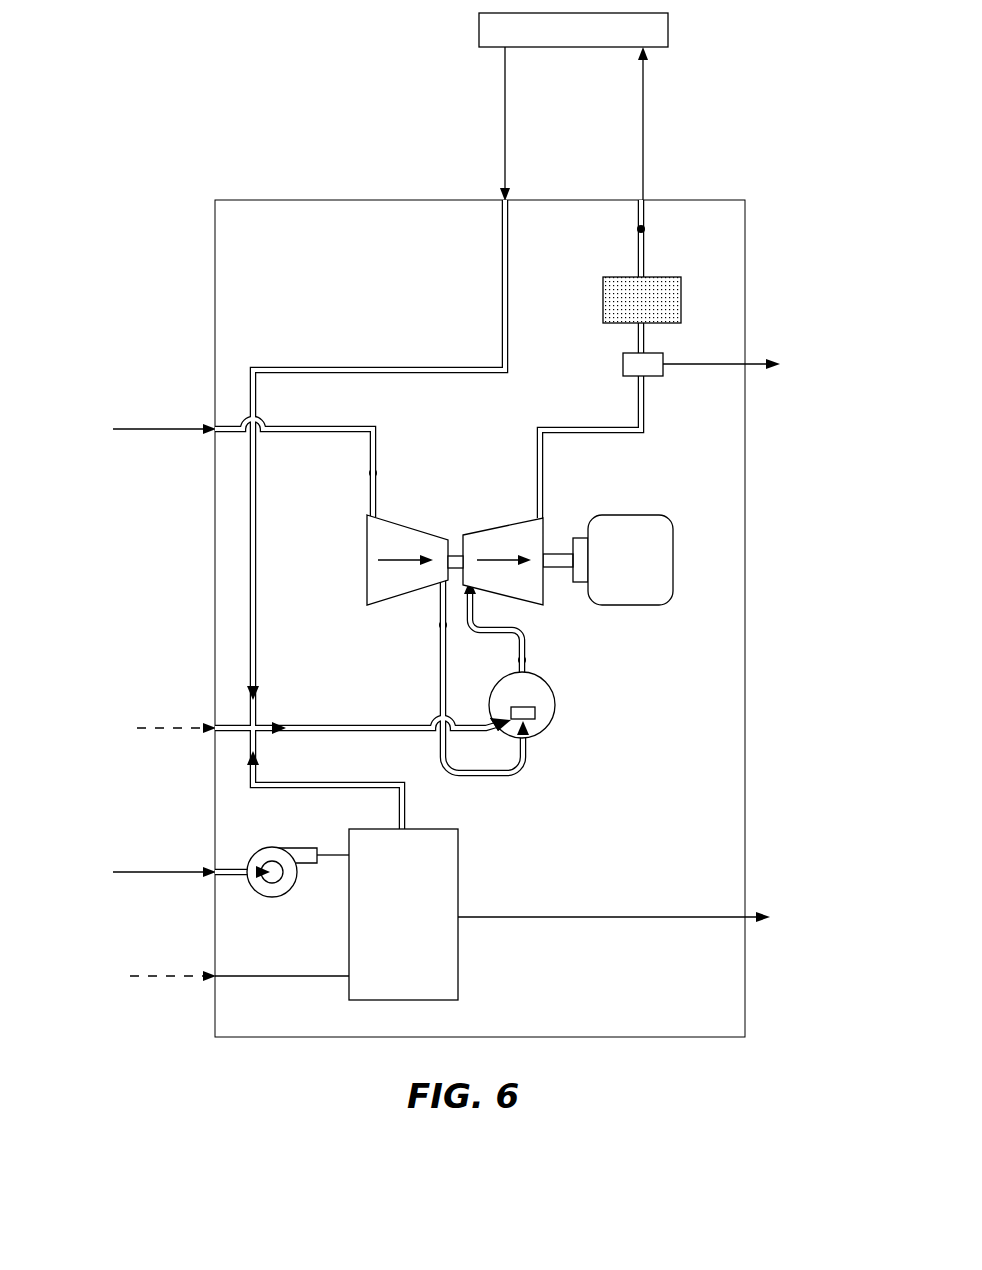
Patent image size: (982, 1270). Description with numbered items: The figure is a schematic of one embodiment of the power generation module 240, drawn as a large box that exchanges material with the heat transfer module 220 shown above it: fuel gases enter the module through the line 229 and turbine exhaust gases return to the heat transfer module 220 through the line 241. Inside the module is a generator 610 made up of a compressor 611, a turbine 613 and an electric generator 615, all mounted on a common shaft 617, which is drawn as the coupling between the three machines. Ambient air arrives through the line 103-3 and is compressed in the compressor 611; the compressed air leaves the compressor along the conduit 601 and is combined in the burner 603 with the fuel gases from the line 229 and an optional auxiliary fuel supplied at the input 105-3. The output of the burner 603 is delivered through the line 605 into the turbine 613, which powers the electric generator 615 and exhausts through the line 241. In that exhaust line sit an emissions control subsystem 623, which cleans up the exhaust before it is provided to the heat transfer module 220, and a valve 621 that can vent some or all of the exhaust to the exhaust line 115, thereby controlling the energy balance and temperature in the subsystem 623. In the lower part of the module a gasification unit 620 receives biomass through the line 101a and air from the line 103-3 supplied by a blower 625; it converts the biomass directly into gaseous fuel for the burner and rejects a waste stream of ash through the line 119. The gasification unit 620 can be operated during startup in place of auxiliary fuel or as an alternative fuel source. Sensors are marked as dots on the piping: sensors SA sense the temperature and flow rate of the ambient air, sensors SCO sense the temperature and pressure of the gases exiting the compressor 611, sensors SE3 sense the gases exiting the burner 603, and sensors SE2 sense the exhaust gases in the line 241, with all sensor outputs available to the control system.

The heat transfer module 220 is at (573, 30).
The line 229 is at (500, 145).
The line 241 is at (646, 105).
The power generation module 240 is at (151, 150).
The line 103-3 is at (165, 427).
The input 105-3 is at (168, 726).
The line 101a is at (165, 972).
The generator 610 is at (459, 450).
The compressor 611 is at (365, 568).
The turbine 613 is at (546, 518).
The electric generator 615 is at (673, 520).
The common shaft 617 is at (560, 553).
The compressed air conduit 601 is at (440, 650).
The burner 603 is at (556, 702).
The line 605 is at (530, 655).
The gasification unit 620 is at (458, 875).
The valve 621 is at (623, 366).
The emissions control subsystem 623 is at (603, 310).
The blower 625 is at (278, 847).
The exhaust line 115 is at (758, 372).
The line 119 is at (752, 920).
The sensors SA is at (369, 473).
The sensors SCO is at (440, 626).
The sensors SE2 is at (638, 229).
The sensors SE3 is at (519, 660).